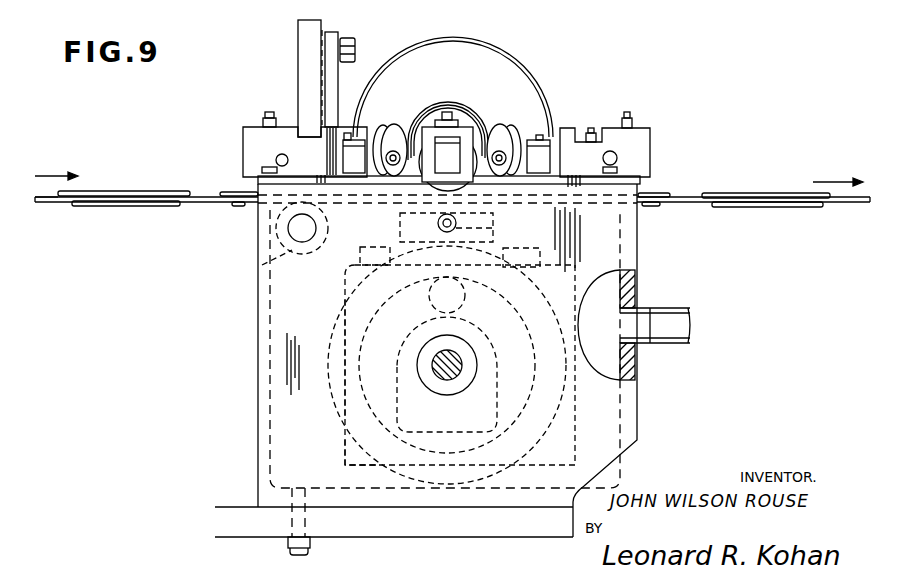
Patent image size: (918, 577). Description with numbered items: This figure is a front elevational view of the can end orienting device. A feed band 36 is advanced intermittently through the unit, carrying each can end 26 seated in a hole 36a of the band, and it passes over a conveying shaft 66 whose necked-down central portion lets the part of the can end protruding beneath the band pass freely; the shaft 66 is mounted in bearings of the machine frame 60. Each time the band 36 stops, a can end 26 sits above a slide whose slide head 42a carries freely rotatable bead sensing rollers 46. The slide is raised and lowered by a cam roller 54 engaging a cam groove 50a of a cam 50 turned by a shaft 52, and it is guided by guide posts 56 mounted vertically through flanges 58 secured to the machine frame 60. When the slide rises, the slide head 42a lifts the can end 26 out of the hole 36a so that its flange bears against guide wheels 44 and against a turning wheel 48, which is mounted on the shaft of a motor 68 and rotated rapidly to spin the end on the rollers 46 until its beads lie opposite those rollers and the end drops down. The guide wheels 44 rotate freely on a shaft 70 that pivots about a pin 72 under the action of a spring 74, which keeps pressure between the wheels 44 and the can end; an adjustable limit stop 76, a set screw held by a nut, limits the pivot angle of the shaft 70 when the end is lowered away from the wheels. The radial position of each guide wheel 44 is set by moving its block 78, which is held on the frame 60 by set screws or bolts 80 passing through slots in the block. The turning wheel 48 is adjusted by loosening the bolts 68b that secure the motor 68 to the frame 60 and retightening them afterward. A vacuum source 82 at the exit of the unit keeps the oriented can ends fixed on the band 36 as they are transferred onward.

The can end 26 is at (232, 209).
The feed band 36 is at (199, 186).
The hole 36a is at (66, 210).
The slide head 42a is at (398, 232).
The guide wheels 44 is at (393, 140).
The bead sensing rollers 46 is at (493, 233).
The turning wheel 48 is at (408, 148).
The cam 50 is at (341, 404).
The cam groove 50a is at (355, 352).
The shaft 52 is at (447, 381).
The cam roller 54 is at (440, 297).
The guide posts 56 is at (343, 461).
The flanges 58 is at (558, 428).
The machine frame 60 is at (628, 292).
The conveying shaft 66 is at (262, 265).
The motor 68 is at (510, 82).
The bolts 68b is at (356, 50).
The shaft 70 is at (535, 142).
The pin 72 is at (617, 160).
The spring 74 is at (350, 133).
The adjustable limit stop 76 is at (633, 121).
The block 78 is at (248, 150).
The set screws or bolts 80 is at (592, 130).
The vacuum source 82 is at (680, 325).